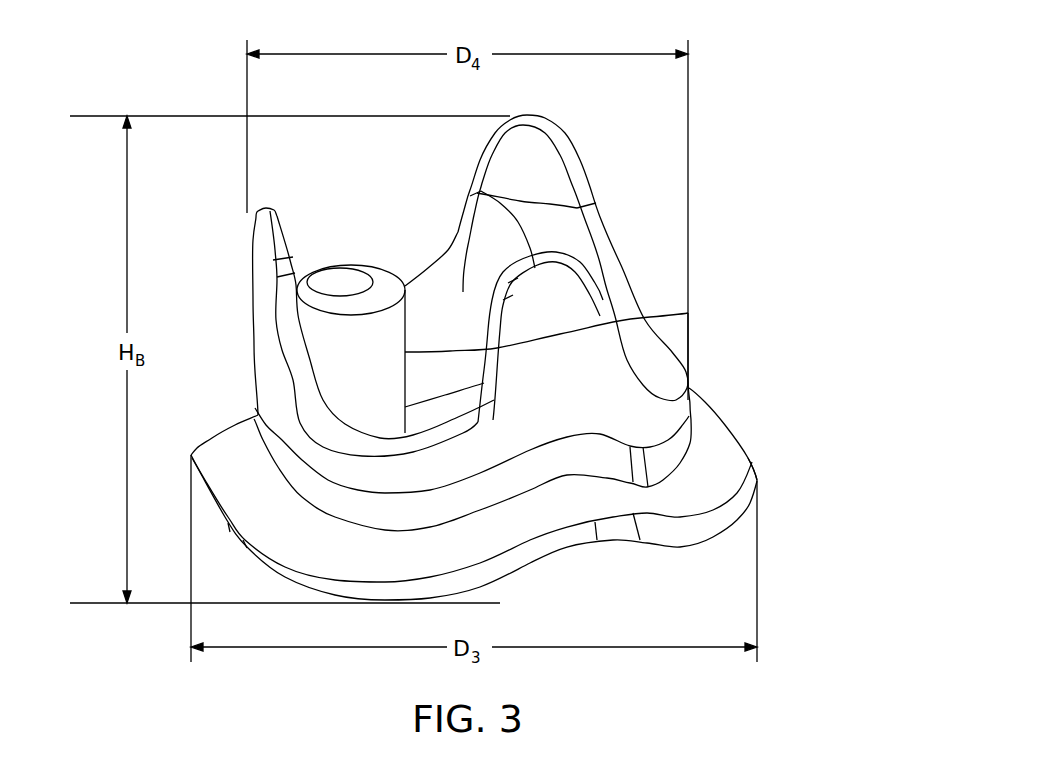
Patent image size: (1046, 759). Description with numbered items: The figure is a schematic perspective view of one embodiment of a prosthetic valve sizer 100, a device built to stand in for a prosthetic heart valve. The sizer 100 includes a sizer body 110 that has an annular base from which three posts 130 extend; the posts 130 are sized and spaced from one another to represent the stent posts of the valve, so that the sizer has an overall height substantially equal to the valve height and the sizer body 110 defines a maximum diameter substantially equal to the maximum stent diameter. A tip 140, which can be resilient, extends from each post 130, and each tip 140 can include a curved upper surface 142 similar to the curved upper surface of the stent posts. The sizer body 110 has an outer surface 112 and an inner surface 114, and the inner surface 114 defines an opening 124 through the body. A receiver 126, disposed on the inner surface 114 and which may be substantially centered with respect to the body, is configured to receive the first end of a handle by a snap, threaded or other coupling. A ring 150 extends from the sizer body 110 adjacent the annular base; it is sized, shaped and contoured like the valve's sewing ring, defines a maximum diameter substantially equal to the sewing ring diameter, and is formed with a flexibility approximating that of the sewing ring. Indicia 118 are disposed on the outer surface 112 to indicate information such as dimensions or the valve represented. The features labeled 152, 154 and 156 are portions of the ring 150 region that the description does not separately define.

The prosthetic valve sizer 100 is at (667, 132).
The sizer body 110 is at (654, 279).
The outer surface 112 is at (678, 408).
The inner surface 114 is at (463, 285).
The indicia 118 is at (252, 342).
The opening 124 is at (438, 405).
The receiver 126 is at (333, 263).
The post 130 is at (252, 300).
The tip 140 is at (263, 208).
The curved upper surface 142 is at (253, 227).
The ring 150 is at (739, 536).
The base front edge 152 is at (653, 545).
The base right corner 154 is at (759, 477).
The base left corner 156 is at (235, 497).